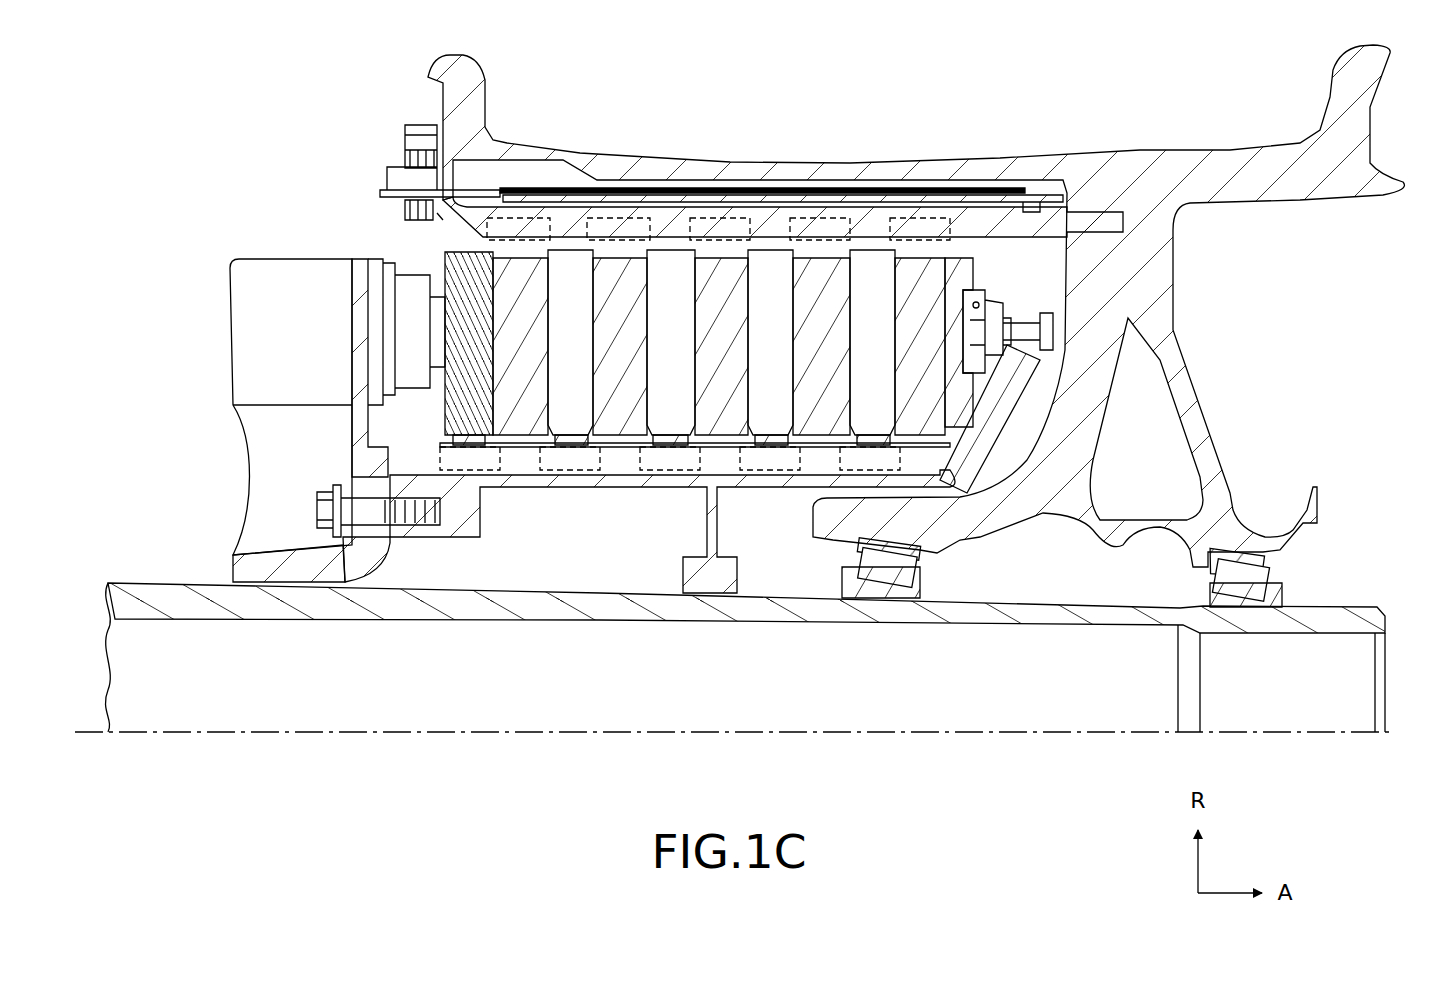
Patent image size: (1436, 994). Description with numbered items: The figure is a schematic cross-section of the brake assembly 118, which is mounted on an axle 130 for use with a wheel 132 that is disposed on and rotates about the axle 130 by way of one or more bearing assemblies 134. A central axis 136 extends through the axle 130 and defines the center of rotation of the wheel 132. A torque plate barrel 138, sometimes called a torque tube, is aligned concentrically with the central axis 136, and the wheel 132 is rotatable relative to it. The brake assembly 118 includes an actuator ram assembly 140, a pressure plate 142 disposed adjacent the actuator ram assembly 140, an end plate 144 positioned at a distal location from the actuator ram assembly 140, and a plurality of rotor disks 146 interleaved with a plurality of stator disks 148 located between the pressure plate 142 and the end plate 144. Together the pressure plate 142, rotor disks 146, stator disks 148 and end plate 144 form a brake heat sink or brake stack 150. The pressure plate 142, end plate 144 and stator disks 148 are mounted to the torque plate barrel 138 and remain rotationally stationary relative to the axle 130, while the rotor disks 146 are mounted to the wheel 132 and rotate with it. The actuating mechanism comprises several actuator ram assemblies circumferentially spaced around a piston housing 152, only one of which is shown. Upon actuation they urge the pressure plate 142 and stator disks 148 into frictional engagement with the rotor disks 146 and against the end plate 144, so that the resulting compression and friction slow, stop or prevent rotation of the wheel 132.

The brake assembly 118 is at (235, 125).
The axle 130 is at (1042, 620).
The wheel 132 is at (1138, 262).
The bearing assemblies 134 is at (1250, 572).
The central axis 136 is at (998, 734).
The torque plate barrel 138 is at (545, 497).
The actuator ram assembly 140 is at (322, 240).
The pressure plate 142 is at (440, 253).
The end plate 144 is at (968, 270).
The rotor disks 146 is at (523, 270).
The stator disks 148 is at (668, 268).
The brake stack 150 is at (830, 275).
The piston housing 152 is at (238, 313).